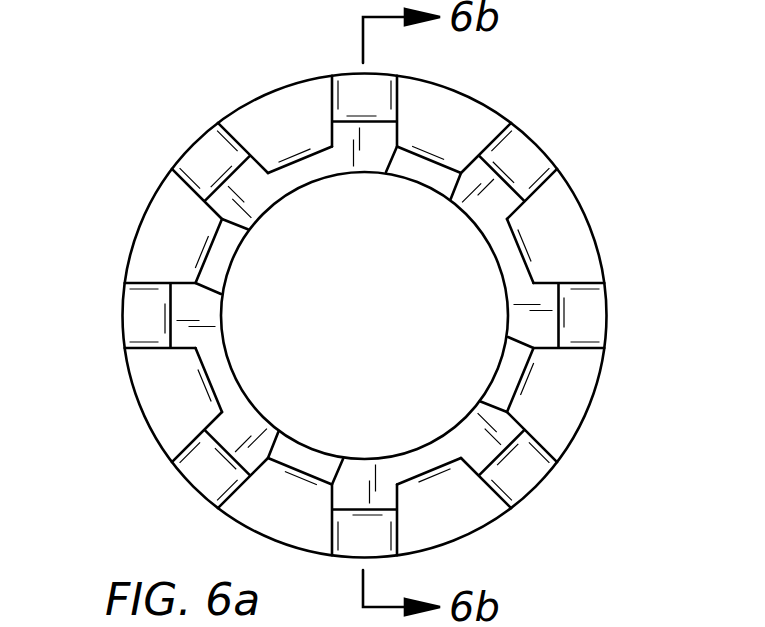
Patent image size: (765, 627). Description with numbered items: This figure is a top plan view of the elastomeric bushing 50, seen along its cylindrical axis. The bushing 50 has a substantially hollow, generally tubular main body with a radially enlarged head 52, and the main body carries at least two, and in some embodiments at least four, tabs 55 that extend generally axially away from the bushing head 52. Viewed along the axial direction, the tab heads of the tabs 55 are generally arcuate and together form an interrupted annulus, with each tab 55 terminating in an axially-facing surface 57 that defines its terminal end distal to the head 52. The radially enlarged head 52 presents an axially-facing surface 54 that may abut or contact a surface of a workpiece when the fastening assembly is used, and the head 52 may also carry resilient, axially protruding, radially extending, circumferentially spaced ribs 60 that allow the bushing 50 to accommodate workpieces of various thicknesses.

The bushing 50 is at (172, 63).
The radially enlarged head 52 is at (157, 237).
The axially-facing surface 54 is at (565, 208).
The tab 55 is at (430, 458).
The axially-facing surface 57 is at (513, 263).
The rib 60 is at (199, 158).